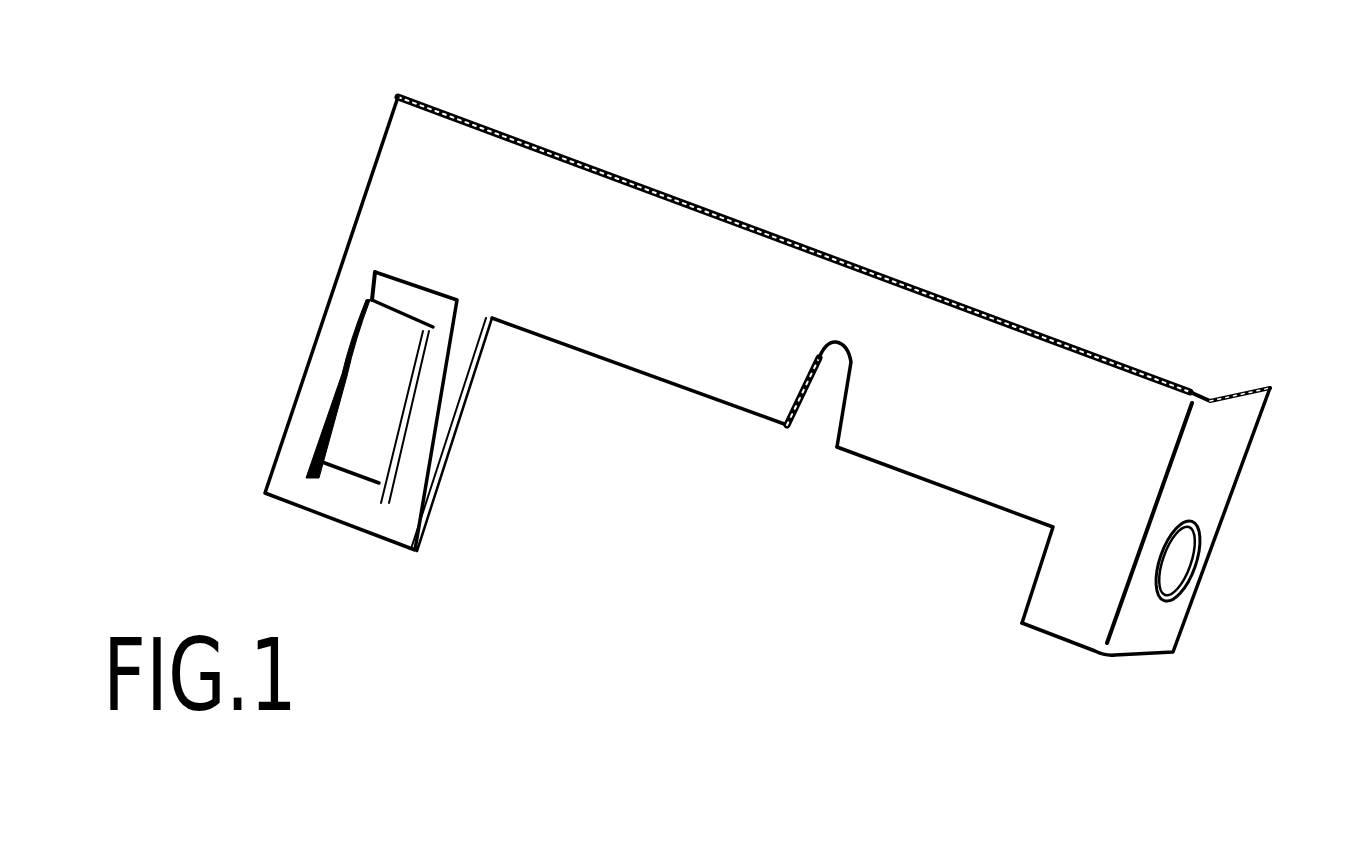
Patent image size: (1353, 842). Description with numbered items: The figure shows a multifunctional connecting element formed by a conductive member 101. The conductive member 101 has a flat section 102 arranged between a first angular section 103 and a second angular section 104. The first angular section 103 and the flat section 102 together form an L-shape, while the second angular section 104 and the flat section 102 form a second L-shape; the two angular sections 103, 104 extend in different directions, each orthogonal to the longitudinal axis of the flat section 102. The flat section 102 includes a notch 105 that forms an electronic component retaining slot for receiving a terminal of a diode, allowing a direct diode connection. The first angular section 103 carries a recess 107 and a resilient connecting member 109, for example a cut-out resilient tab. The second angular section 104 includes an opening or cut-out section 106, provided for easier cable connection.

The conductive member 101 is at (760, 390).
The flat section 102 is at (617, 203).
The first angular section 103 is at (318, 373).
The second angular section 104 is at (1183, 568).
The notch 105 is at (822, 427).
The opening or cut-out section 106 is at (1195, 530).
The recess 107 is at (490, 347).
The resilient connecting member 109 is at (395, 357).